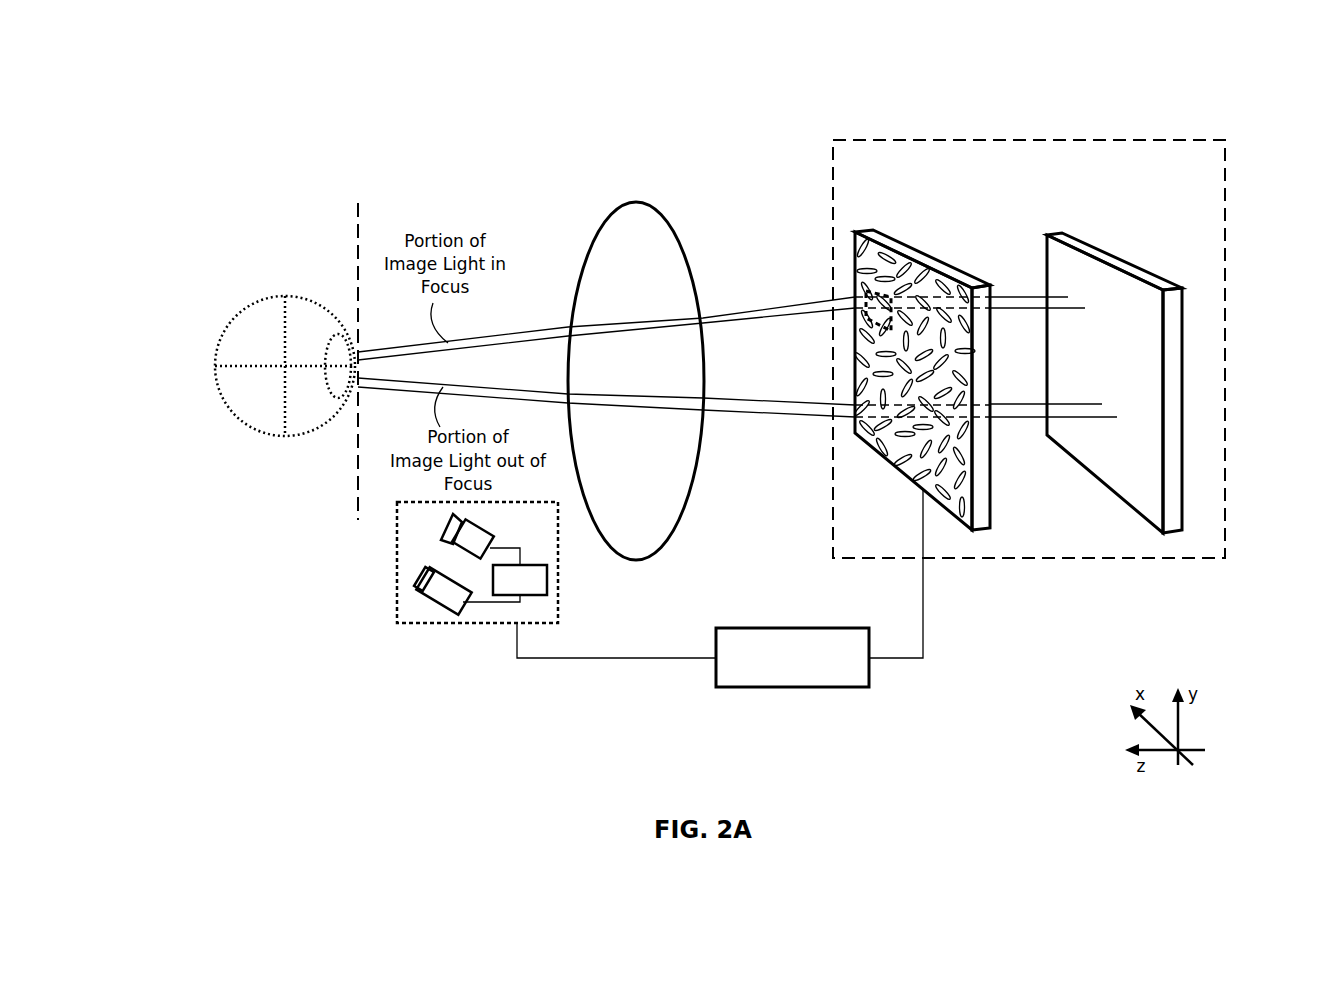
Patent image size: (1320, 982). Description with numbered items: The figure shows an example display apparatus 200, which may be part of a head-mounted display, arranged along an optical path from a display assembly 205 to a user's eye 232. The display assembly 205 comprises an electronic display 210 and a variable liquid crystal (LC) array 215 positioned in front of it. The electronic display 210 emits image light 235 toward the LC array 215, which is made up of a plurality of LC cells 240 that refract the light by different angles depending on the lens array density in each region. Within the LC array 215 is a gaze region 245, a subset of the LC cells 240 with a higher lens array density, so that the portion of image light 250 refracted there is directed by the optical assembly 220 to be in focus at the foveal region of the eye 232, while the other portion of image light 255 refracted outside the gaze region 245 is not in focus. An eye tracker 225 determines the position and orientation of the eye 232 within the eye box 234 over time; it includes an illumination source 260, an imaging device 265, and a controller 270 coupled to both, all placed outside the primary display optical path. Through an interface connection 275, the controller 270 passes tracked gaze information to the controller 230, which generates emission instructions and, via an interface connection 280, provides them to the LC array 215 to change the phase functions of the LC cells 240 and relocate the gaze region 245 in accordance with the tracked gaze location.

The display apparatus 200 is at (198, 86).
The display assembly 205 is at (916, 140).
The electronic display 210 is at (1108, 257).
The liquid crystal (LC) array 215 is at (928, 263).
The optical assembly 220 is at (622, 201).
The eye tracker 225 is at (470, 623).
The controller 230 is at (843, 684).
The eye 232 is at (248, 425).
The eye box 234 is at (355, 307).
The image light 235 is at (1010, 310).
The LC cells 240 is at (932, 498).
The gaze region 245 is at (873, 280).
The portion of image light 250 is at (770, 305).
The other portion of image light 255 is at (753, 413).
The illumination source 260 is at (423, 590).
The imaging device 265 is at (442, 535).
The controller 270 is at (537, 582).
The interface connection 275 is at (562, 660).
The interface connection 280 is at (923, 643).